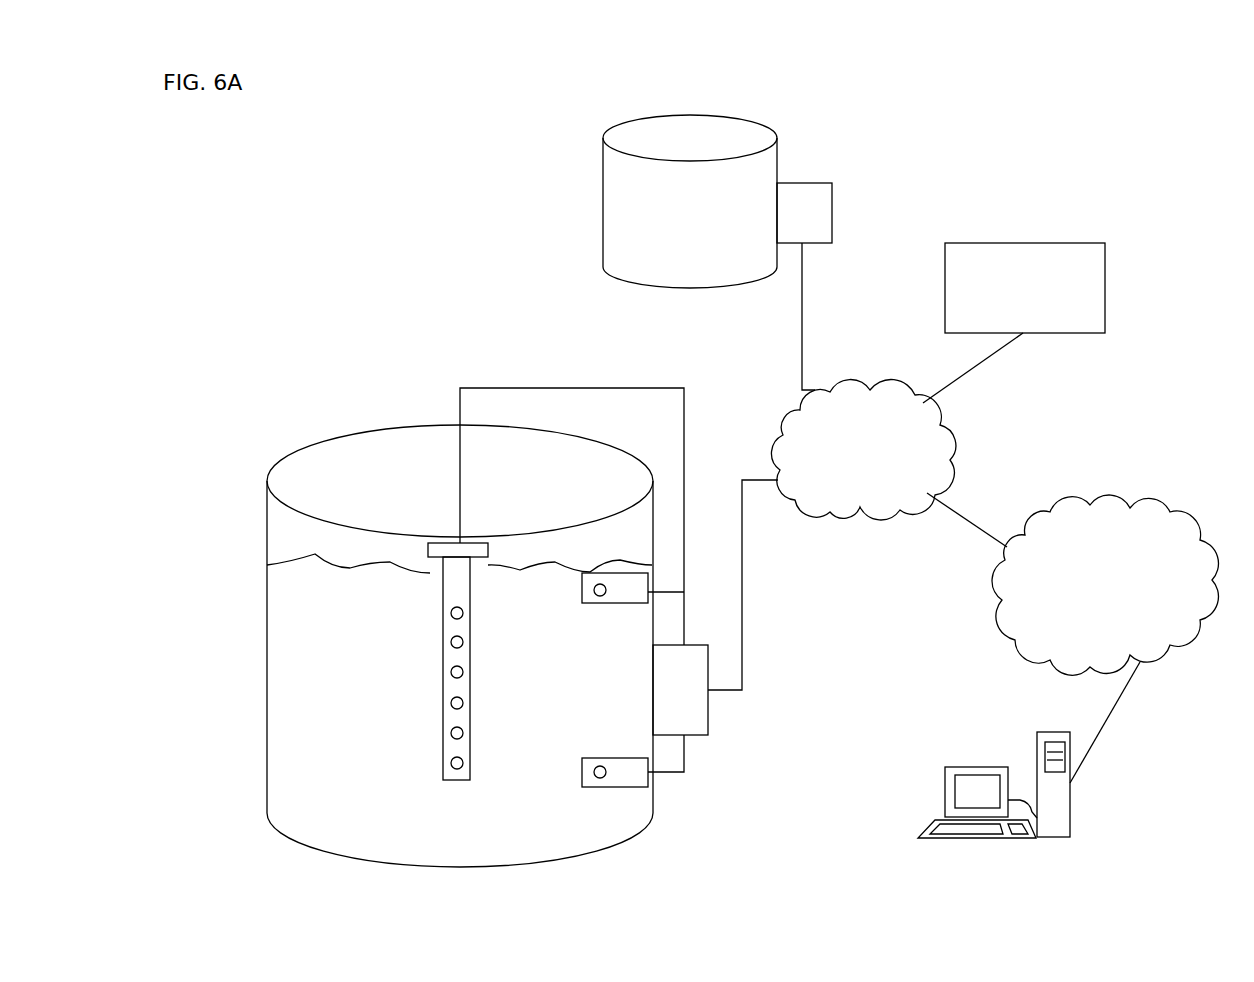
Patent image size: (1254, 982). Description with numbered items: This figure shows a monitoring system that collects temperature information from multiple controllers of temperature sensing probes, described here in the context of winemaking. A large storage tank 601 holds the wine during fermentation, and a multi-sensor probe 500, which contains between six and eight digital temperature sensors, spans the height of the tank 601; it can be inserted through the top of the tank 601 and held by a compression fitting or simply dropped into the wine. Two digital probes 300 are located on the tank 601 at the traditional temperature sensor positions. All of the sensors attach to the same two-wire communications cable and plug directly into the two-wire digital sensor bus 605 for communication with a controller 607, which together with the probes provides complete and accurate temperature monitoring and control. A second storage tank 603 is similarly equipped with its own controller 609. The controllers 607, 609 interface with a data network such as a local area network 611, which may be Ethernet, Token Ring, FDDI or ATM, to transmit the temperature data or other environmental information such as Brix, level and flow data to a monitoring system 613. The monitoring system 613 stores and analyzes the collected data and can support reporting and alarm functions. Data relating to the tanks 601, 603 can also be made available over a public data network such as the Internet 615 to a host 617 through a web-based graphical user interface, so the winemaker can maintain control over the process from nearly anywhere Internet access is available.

The tank 601 is at (345, 432).
The multi-sensor probe 500 is at (443, 602).
The 2-wire digital sensor bus 605 is at (643, 388).
The digital probe 300 is at (612, 607).
The controller 607 is at (708, 712).
The tank 603 is at (603, 188).
The controller 609 is at (832, 223).
The monitoring system 613 is at (1105, 300).
The local area network 611 is at (863, 450).
The Internet 615 is at (1072, 638).
The host 617 is at (1012, 732).